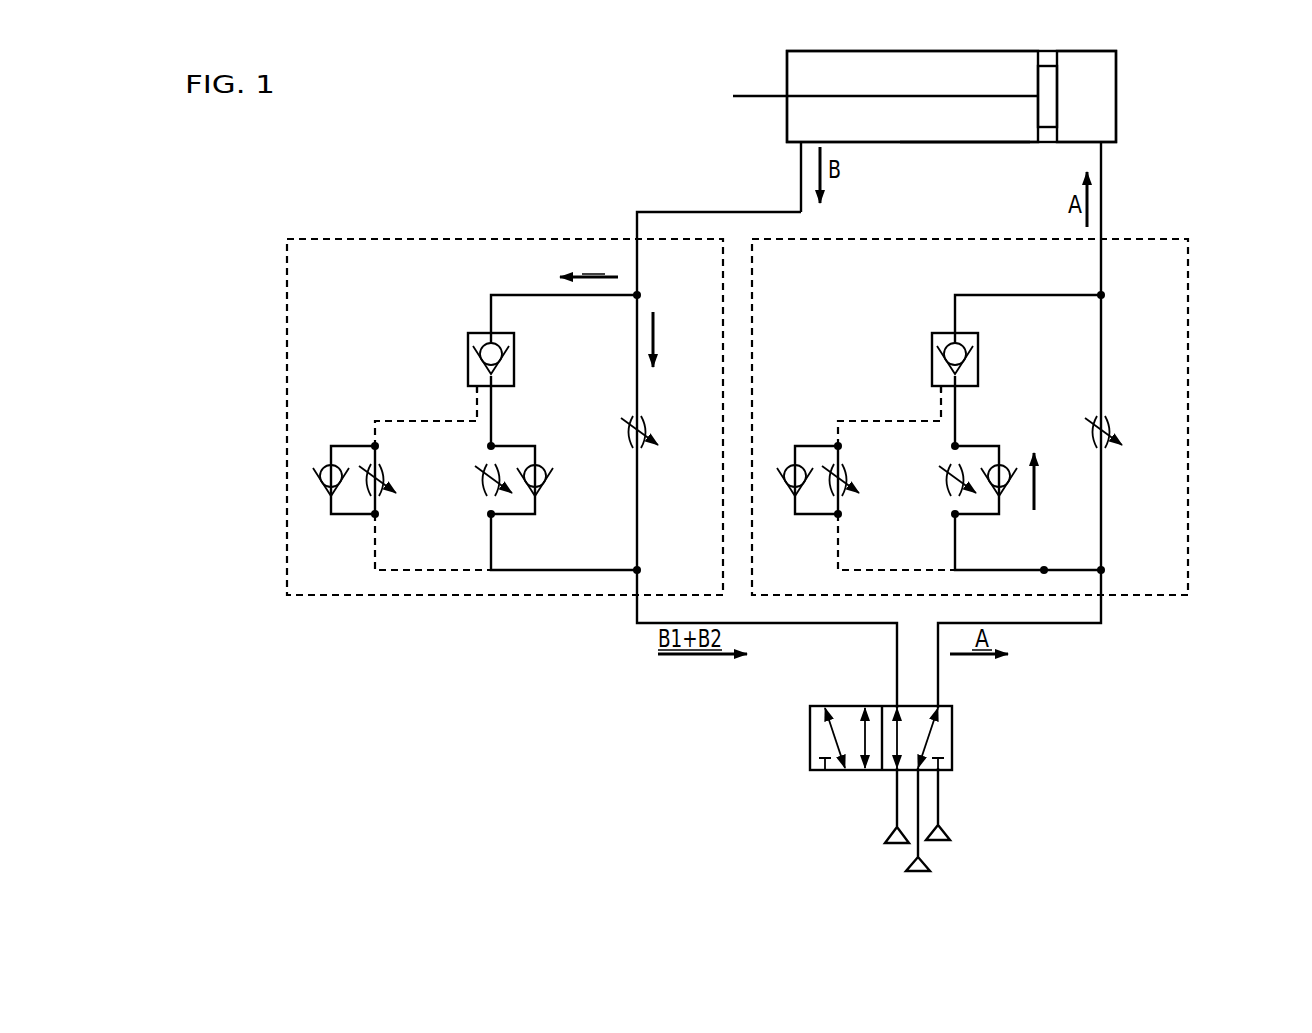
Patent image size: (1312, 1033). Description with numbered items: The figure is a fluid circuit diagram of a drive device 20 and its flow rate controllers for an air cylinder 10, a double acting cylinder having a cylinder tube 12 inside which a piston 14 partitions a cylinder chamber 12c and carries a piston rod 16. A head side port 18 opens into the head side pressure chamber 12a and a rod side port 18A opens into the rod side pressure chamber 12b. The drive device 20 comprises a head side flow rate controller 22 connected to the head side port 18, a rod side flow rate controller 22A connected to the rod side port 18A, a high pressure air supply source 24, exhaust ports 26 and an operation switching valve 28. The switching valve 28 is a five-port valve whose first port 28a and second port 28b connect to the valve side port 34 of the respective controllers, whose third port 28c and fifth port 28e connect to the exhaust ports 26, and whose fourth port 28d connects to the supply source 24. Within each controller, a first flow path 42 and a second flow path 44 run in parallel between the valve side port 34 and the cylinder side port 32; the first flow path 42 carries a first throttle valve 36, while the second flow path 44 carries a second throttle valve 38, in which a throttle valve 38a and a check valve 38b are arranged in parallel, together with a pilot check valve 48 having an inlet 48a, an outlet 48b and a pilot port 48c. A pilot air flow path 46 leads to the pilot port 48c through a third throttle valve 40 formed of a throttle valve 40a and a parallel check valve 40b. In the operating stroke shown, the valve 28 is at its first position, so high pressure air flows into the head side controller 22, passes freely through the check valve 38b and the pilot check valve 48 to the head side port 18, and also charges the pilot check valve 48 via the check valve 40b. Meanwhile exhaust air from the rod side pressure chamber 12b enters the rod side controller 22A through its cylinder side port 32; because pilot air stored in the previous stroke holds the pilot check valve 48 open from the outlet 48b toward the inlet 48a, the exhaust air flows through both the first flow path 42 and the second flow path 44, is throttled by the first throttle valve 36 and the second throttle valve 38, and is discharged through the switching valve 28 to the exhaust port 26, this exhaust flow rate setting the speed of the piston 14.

The air cylinder 10 is at (957, 126).
The cylinder tube 12 is at (881, 142).
The head side pressure chamber 12a is at (1105, 102).
The rod side pressure chamber 12b is at (923, 86).
The cylinder chamber 12c is at (960, 142).
The piston 14 is at (1048, 128).
The piston rod 16 is at (936, 96).
The head side port 18 is at (1104, 146).
The rod side port 18A is at (800, 146).
The drive device 20 is at (783, 394).
The head side flow rate controller 22 is at (1170, 237).
The rod side flow rate controller 22A is at (465, 238).
The high pressure air supply source 24 is at (931, 862).
The exhaust ports 26 is at (948, 833).
The operation switching valve 28 is at (912, 754).
The first port 28a is at (940, 705).
The second port 28b is at (896, 705).
The third port 28c is at (940, 772).
The fourth port 28d is at (917, 772).
The fifth port 28e is at (896, 772).
The cylinder side port 32 is at (636, 237).
The valve side port 34 is at (634, 598).
The first throttle valve 36 is at (650, 428).
The second throttle valve 38 is at (744, 481).
The throttle valve 38a is at (482, 479).
The check valve 38b is at (545, 496).
The third throttle valve 40 is at (581, 425).
The throttle valve 40a is at (390, 467).
The check valve 40b is at (326, 467).
The first flow path 42 is at (639, 489).
The second flow path 44 is at (549, 295).
The pilot air flow path 46 is at (407, 428).
The pilot check valve 48 is at (723, 347).
The inlet 48a is at (493, 388).
The outlet 48b is at (491, 333).
The pilot port 48c is at (478, 388).